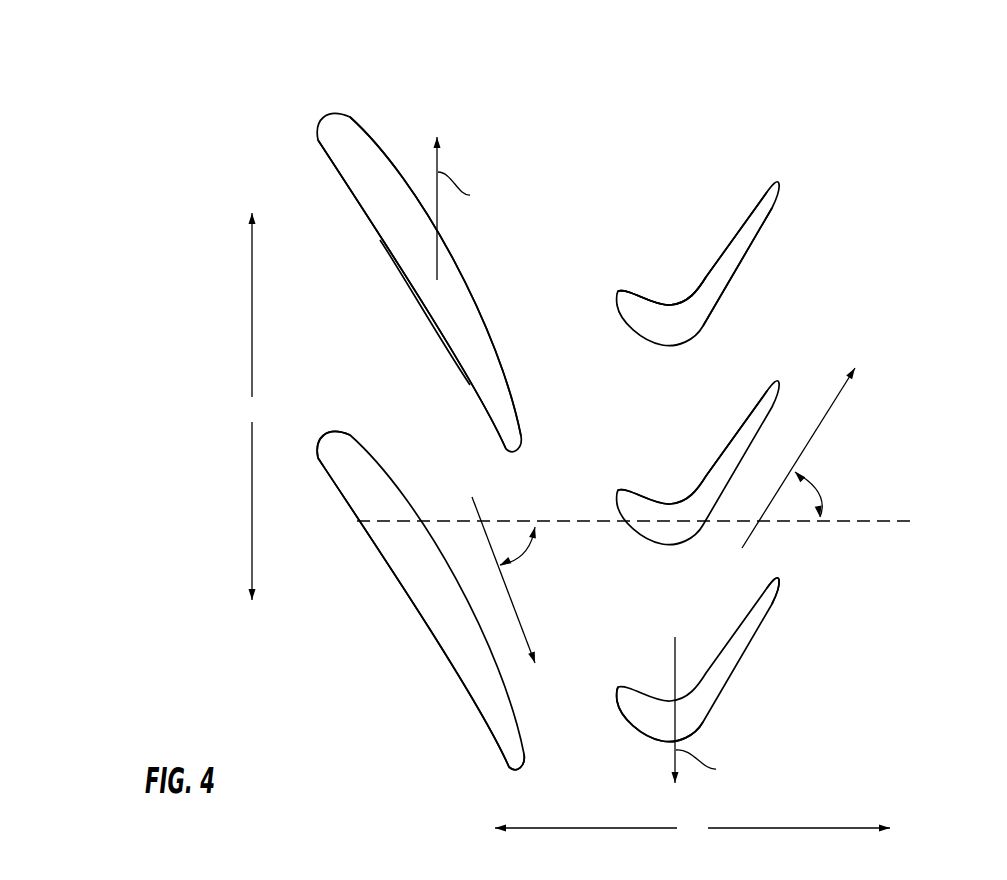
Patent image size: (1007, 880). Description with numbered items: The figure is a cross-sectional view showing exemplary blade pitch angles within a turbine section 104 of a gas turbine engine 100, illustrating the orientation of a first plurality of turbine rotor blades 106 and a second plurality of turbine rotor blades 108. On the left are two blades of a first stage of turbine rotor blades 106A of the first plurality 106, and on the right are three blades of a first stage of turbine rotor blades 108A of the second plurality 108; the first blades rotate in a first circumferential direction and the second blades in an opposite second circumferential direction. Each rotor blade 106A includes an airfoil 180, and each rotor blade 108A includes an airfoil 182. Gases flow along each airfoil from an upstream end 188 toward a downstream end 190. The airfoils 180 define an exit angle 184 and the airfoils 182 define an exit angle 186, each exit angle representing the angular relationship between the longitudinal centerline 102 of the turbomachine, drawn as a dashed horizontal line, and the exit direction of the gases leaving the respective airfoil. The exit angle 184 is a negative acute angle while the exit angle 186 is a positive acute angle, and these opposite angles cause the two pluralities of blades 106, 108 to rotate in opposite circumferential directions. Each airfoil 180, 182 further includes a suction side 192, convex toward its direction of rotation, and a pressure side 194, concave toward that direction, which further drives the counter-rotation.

The gas turbine engine 100 is at (927, 108).
The longitudinal centerline 102 is at (905, 521).
The turbine section 104 is at (686, 84).
The first plurality of turbine rotor blades 106 is at (382, 88).
The first stage of turbine rotor blades 106A is at (498, 237).
The second plurality of turbine rotor blades 108 is at (703, 178).
The first stage of turbine rotor blades 108A is at (783, 230).
The airfoil 180 is at (358, 197).
The airfoil 182 is at (733, 260).
The exit angle 184 is at (527, 556).
The exit angle 186 is at (818, 492).
The upstream end 188 is at (318, 428).
The downstream end 190 is at (782, 583).
The suction side 192 is at (480, 318).
The pressure side 194 is at (680, 292).